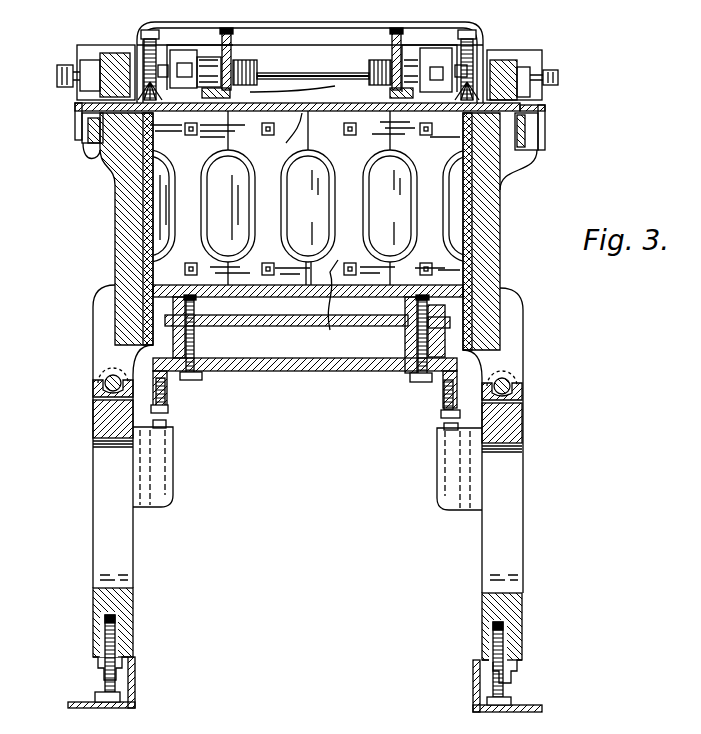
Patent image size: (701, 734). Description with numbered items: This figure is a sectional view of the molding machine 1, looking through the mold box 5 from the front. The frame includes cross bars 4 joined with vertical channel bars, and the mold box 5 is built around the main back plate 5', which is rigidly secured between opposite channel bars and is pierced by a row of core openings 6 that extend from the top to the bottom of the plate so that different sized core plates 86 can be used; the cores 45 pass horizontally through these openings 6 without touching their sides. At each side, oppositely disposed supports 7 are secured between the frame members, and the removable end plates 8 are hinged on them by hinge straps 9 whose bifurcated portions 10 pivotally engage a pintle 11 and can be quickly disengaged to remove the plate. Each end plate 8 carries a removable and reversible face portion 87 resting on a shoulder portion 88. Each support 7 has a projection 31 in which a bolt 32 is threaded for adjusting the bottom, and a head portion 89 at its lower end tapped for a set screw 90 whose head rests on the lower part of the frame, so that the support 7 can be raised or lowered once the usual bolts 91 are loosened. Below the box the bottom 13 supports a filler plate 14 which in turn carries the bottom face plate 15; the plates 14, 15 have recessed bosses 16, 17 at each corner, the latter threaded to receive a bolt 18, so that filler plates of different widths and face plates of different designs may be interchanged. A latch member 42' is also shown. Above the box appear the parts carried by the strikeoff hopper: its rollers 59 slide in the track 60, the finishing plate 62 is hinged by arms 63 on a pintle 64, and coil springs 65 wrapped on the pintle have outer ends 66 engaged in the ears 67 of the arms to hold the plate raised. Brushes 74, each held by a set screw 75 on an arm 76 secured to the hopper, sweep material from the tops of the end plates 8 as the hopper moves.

The molding machine 1 is at (97, 260).
The cross bars 4 is at (545, 120).
The mold box 5 is at (349, 279).
The main back plate 5' is at (310, 178).
The core openings 6 is at (330, 160).
The supports 7 is at (97, 428).
The end plates 8 is at (137, 218).
The hinge straps 9 is at (108, 325).
The bifurcated portions 10 is at (93, 387).
The pintle 11 is at (106, 378).
The bottom 13 is at (335, 372).
The filler plate 14 is at (272, 322).
The bottom face plate 15 is at (255, 300).
The recessed bosses 16 is at (397, 360).
The recessed bosses 17 is at (382, 320).
The bolt 18 is at (188, 382).
The projections 31 is at (173, 465).
The bolts 32 is at (167, 420).
The latch member 42' is at (304, 151).
The cores 45 is at (309, 206).
The rollers 59 is at (113, 75).
The track 60 is at (103, 118).
The finishing plate 62 is at (282, 137).
The hinge arms 63 is at (320, 90).
The pintle 64 is at (320, 74).
The coil springs 65 is at (258, 72).
The extended spring end 66 is at (234, 57).
The ear 67 is at (228, 30).
The brushes 74 is at (148, 75).
The set screw 75 is at (145, 82).
The arm 76 is at (460, 42).
The core plates 86 is at (334, 307).
The face portion 87 is at (468, 208).
The shoulder portion 88 is at (468, 328).
The head portion 89 is at (98, 613).
The set screw 90 is at (98, 665).
The bolts 91 is at (100, 690).